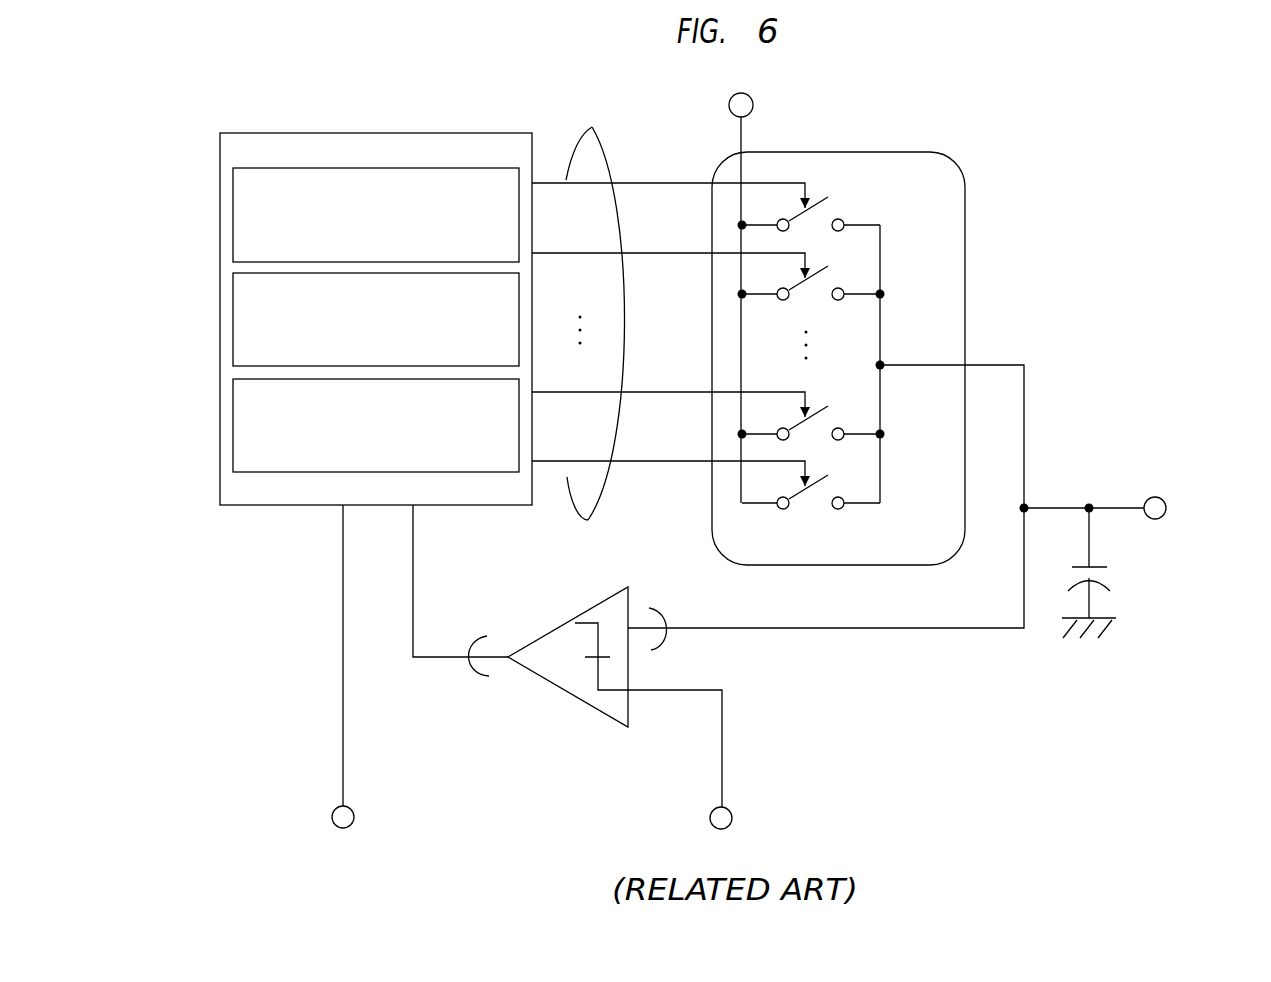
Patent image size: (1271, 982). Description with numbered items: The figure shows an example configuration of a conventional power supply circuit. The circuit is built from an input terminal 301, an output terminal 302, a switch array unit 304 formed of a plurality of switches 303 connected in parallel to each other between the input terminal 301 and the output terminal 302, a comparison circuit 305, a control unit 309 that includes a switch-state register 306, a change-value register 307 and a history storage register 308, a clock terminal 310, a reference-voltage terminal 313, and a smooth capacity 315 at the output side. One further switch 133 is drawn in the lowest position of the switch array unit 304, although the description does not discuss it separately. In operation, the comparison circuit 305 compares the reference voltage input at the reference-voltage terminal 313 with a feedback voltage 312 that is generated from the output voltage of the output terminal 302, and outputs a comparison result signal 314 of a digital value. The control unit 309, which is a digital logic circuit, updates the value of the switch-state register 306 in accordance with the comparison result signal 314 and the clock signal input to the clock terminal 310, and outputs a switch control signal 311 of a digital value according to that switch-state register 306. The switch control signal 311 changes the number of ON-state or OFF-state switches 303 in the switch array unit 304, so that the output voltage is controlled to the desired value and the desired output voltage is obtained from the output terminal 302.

The input terminal 301 is at (753, 104).
The output terminal 302 is at (1157, 497).
The switch 303 is at (842, 213).
The switch 133 is at (842, 491).
The switch array unit 304 is at (965, 262).
The comparison circuit 305 is at (560, 690).
The switch-state register 306 is at (233, 211).
The change-value register 307 is at (233, 312).
The history storage register 308 is at (233, 420).
The control unit 309 is at (220, 152).
The clock terminal 310 is at (355, 811).
The switch control signal 311 is at (596, 128).
The feedback voltage 312 is at (652, 600).
The reference-voltage terminal 313 is at (732, 811).
The comparison result signal 314 is at (478, 678).
The smooth capacity 315 is at (1110, 582).